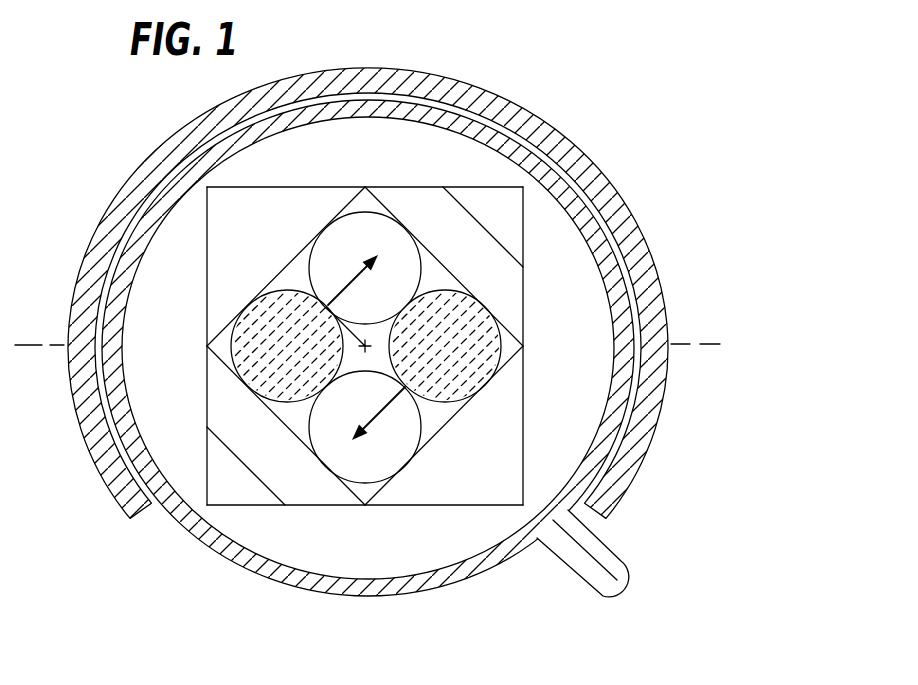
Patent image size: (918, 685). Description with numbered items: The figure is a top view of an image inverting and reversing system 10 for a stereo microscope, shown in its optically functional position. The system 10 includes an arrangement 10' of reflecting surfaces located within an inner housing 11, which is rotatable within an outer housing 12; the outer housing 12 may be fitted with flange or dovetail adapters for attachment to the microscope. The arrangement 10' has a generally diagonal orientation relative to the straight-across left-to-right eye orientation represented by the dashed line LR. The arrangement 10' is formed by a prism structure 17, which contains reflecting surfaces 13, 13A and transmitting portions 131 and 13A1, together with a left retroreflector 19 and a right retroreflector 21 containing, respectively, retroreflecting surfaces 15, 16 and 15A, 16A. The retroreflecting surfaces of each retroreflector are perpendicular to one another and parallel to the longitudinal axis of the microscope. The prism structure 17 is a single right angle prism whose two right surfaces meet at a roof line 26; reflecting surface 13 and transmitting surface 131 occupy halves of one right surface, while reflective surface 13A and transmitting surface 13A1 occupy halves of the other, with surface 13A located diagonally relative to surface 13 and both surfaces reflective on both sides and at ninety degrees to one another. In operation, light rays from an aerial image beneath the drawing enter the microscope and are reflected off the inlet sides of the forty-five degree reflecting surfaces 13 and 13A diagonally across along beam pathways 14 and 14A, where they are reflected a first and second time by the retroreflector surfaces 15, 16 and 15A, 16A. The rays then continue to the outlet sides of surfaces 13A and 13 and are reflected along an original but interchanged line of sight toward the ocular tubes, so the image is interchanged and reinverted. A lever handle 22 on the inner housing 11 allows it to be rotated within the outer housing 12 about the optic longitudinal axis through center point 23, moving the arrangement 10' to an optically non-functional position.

The image inverting and reversing system 10 is at (408, 364).
The arrangement of reflecting surfaces 10' is at (368, 355).
The inner housing 11 is at (408, 602).
The outer housing 12 is at (660, 455).
The reflecting surface 13 is at (313, 389).
The reflective surface 13A is at (480, 389).
The transmitting surface 13A1 is at (360, 228).
The transmitting surface 131 is at (383, 467).
The beam pathway 14 is at (345, 268).
The beam pathway 14A is at (366, 447).
The retroreflecting surface 15 is at (410, 197).
The retroreflecting surface 15A is at (325, 494).
The retroreflecting surface 16 is at (517, 289).
The retroreflecting surface 16A is at (206, 465).
The prism structure 17 is at (461, 410).
The left retroreflector 19 is at (227, 390).
The right retroreflector 21 is at (505, 318).
The lever handle 22 is at (636, 592).
The center point 23 is at (368, 344).
The roof line 26 is at (302, 277).
The left-to-right eye orientation line LR is at (711, 343).